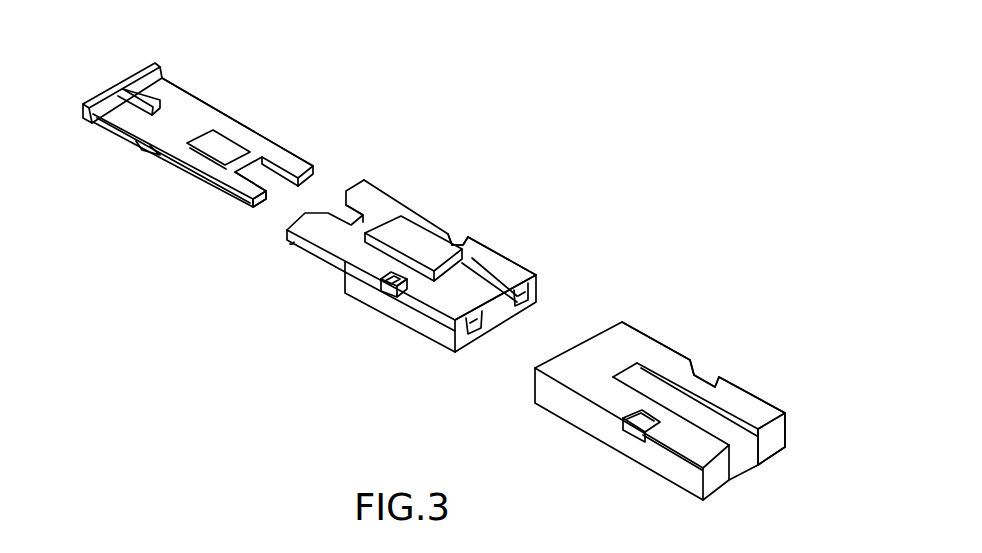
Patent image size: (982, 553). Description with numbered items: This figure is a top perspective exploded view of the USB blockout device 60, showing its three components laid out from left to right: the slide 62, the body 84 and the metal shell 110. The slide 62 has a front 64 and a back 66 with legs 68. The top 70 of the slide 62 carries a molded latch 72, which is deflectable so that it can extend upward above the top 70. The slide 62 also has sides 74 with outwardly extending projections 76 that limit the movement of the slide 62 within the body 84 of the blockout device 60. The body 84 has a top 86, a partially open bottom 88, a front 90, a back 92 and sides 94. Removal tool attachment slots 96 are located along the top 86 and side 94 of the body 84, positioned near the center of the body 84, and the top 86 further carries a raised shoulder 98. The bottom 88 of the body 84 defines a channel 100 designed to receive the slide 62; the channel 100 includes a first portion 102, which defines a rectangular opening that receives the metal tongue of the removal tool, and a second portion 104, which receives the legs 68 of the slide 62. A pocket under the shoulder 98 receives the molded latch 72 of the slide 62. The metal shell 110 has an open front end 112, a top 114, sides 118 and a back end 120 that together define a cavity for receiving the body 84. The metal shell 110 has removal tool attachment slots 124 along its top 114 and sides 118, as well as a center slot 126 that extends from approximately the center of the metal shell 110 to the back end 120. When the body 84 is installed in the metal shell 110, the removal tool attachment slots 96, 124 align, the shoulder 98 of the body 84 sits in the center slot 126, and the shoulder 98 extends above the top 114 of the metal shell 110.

The USB blockout device 60 is at (523, 92).
The slide 62 is at (182, 88).
The front 64 is at (80, 113).
The back 66 is at (260, 206).
The legs 68 is at (243, 190).
The top 70 is at (187, 118).
The molded latch 72 is at (222, 148).
The sides 74 is at (181, 166).
The outwardly extending projections 76 is at (141, 147).
The body 84 is at (415, 205).
The top 86 is at (483, 255).
The partially open bottom 88 is at (331, 268).
The front 90 is at (357, 178).
The back 92 is at (532, 288).
The sides 94 is at (413, 315).
The removal tool attachment slots 96 is at (463, 243).
The raised shoulder 98 is at (394, 232).
The channel 100 is at (482, 323).
The first portion 102 is at (483, 297).
The second portion 104 is at (518, 305).
The metal shell 110 is at (695, 356).
The open front end 112 is at (620, 325).
The top 114 is at (637, 342).
The sides 118 is at (662, 460).
The back end 120 is at (773, 445).
The removal tool attachment slots 124 is at (717, 382).
The center slot 126 is at (648, 388).